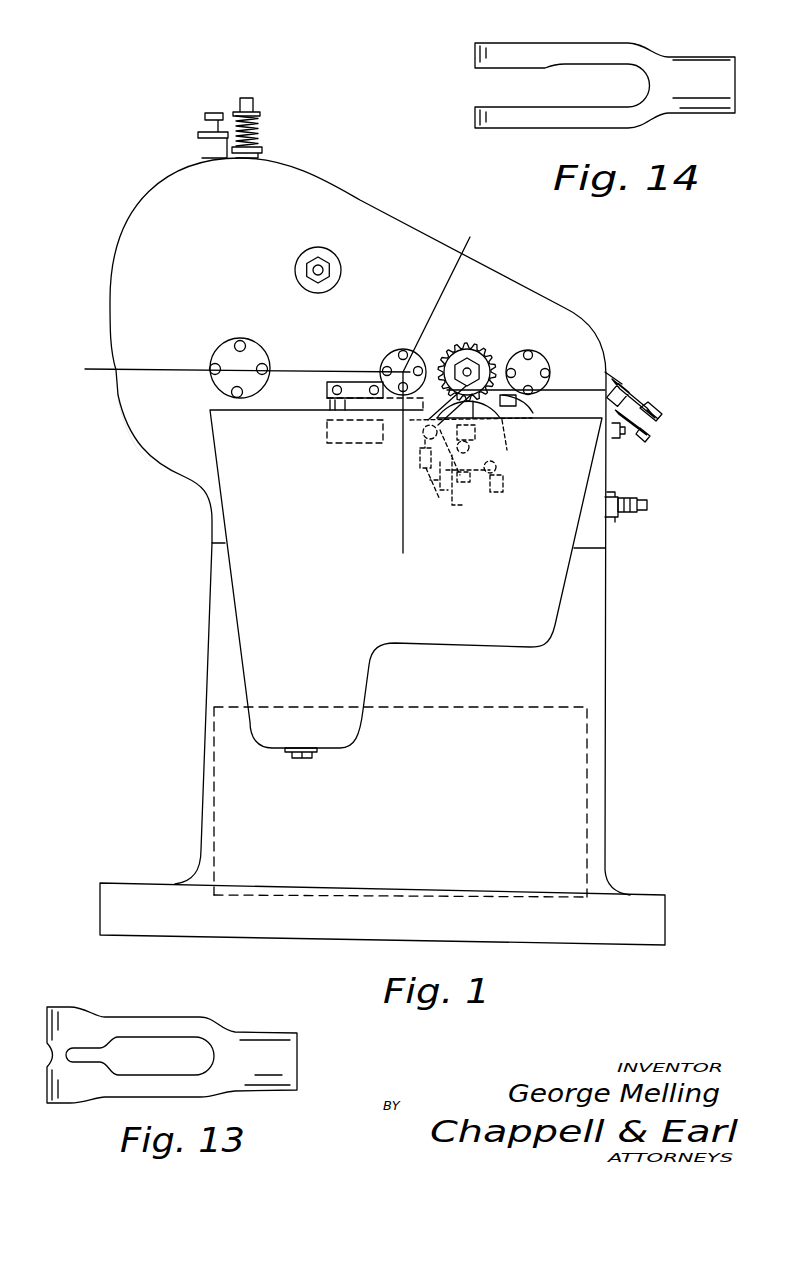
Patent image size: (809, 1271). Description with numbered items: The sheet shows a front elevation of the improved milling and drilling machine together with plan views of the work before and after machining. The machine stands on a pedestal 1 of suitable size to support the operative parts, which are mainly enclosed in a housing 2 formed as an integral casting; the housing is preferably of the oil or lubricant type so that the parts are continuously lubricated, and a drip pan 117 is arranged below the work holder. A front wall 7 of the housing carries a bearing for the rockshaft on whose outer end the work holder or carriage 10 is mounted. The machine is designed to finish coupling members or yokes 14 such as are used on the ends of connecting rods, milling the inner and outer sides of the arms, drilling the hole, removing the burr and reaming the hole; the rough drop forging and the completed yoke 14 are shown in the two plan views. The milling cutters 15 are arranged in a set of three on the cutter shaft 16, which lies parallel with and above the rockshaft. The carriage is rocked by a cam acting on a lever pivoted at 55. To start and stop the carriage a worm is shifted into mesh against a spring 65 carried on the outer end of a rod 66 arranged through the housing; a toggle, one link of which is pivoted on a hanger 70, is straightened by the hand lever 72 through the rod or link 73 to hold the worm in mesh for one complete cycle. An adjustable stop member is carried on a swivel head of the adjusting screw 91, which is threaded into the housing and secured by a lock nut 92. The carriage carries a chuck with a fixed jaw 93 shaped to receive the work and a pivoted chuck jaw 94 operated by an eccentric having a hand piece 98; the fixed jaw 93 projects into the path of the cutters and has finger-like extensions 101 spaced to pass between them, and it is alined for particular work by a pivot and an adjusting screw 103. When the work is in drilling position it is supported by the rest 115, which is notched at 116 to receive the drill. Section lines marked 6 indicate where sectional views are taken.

In FIG. 1, the pedestal 1 is at (212, 595).
In FIG. 1, the housing 2 is at (178, 470).
In FIG. 1, the section line 6- 6 is at (89, 360).
In FIG. 1, the front wall 7 is at (478, 246).
In FIG. 1, the work holder or carriage 10 is at (432, 486).
In FIG. 14, the coupling member or yoke 14 is at (620, 52).
In FIG. 13, the coupling member or yoke 14 is at (157, 1030).
In FIG. 1, the milling cutters 15 is at (468, 346).
In FIG. 1, the cutter shaft 16 is at (476, 365).
In FIG. 1, the pivot 55 is at (320, 265).
In FIG. 1, the spring 65 is at (256, 124).
In FIG. 1, the rod 66 is at (256, 139).
In FIG. 1, the hanger 70 is at (215, 114).
In FIG. 1, the hand lever 72 is at (660, 424).
In FIG. 1, the rod or link 73 is at (640, 404).
In FIG. 1, the adjusting screw 91 is at (631, 497).
In FIG. 1, the lock nut 92 is at (611, 518).
In FIG. 1, the fixed jaw 93 is at (512, 452).
In FIG. 1, the pivoted chuck jaw 94 is at (446, 400).
In FIG. 1, the hand piece 98 is at (464, 500).
In FIG. 1, the finger-like extensions 101 is at (503, 408).
In FIG. 1, the adjusting screw 103 is at (505, 485).
In FIG. 1, the rest 115 is at (368, 420).
In FIG. 1, the recess or notch 116 is at (404, 428).
In FIG. 1, the drip pan 117 is at (490, 643).